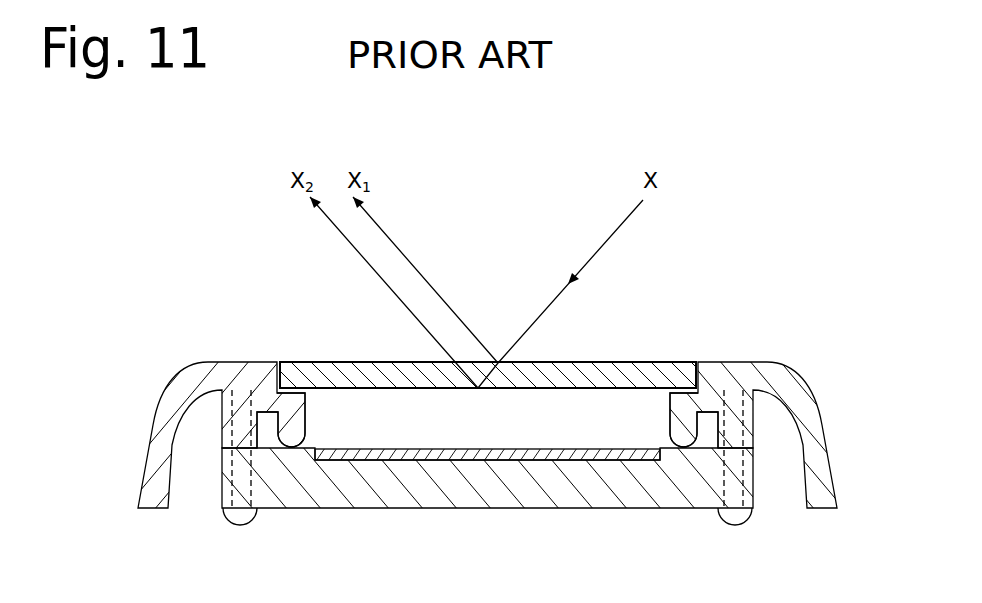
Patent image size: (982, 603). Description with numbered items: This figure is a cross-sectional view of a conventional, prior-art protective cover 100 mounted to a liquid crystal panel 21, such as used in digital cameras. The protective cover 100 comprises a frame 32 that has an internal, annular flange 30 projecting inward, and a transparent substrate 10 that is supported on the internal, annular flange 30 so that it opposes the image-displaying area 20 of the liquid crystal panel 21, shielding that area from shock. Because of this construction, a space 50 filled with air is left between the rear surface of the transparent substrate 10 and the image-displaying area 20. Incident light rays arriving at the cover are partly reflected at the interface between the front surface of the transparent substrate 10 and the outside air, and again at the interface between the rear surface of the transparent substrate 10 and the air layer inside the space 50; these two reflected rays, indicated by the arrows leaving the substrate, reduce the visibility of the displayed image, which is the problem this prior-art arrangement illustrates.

The protective cover 100 is at (491, 407).
The frame 32 is at (153, 428).
The liquid crystal panel 21 is at (503, 499).
The internal, annular flange 30 is at (287, 403).
The transparent substrate 10 is at (600, 362).
The image-displaying area 20 is at (573, 451).
The space 50 is at (503, 434).